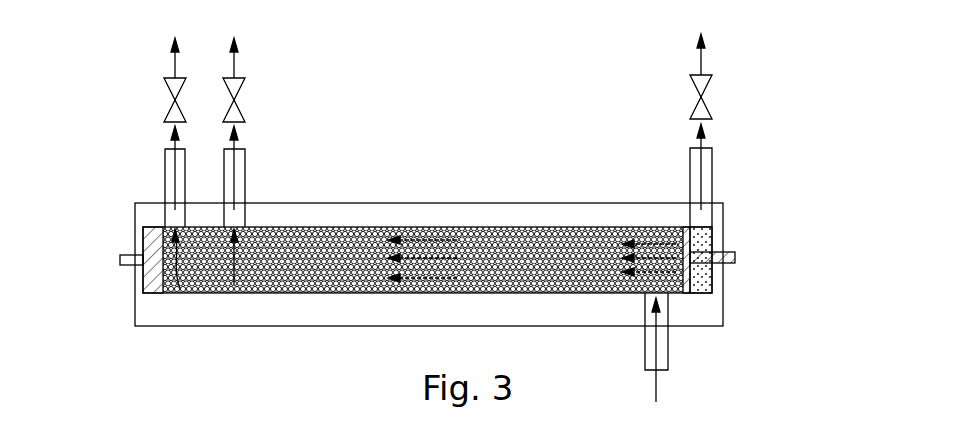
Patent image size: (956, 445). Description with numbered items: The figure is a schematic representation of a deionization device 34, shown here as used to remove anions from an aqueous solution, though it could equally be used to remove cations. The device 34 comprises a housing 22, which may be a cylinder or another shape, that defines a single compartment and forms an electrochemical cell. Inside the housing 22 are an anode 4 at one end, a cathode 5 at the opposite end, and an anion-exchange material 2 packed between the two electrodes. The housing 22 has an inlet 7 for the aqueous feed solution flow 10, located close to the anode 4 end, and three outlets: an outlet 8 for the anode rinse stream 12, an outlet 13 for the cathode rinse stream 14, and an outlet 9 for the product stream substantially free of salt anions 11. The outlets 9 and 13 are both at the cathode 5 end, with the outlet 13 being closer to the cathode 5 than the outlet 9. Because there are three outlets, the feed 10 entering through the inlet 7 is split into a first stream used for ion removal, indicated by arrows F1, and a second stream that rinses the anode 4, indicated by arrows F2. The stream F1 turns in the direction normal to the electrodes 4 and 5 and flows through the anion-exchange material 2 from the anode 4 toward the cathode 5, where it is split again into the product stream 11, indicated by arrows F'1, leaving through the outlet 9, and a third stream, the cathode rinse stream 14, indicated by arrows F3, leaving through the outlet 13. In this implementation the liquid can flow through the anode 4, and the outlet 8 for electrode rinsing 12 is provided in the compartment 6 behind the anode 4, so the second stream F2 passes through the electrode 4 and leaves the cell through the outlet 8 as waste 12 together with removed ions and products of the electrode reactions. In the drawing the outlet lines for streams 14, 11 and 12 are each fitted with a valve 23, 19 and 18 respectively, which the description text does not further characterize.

The anion-exchange material 2 is at (310, 269).
The anode 4 is at (735, 252).
The cathode 5 is at (153, 246).
The compartment 6 is at (712, 280).
The inlet 7 is at (645, 350).
The outlet 8 is at (712, 176).
The outlet 9 is at (245, 186).
The aqueous feed solution flow 10 is at (645, 423).
The product stream substantially free of salt anions 11 is at (222, 33).
The anode rinse stream 12 is at (689, 28).
The outlet 13 is at (165, 186).
The cathode rinse stream 14 is at (163, 33).
The valve 18 is at (710, 87).
The valve 19 is at (237, 97).
The housing 22 is at (349, 316).
The valve 23 is at (173, 98).
The deionization device 34 is at (530, 142).
The first stream for ions removal F1 is at (415, 227).
The product stream flow F'1 is at (290, 197).
The second stream for anode rinsing F2 is at (680, 293).
The cathode rinse stream flow F3 is at (180, 291).